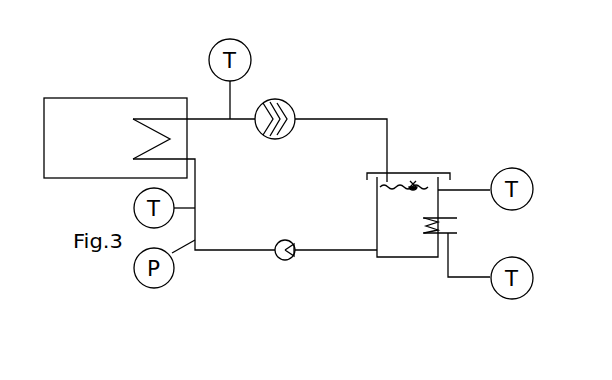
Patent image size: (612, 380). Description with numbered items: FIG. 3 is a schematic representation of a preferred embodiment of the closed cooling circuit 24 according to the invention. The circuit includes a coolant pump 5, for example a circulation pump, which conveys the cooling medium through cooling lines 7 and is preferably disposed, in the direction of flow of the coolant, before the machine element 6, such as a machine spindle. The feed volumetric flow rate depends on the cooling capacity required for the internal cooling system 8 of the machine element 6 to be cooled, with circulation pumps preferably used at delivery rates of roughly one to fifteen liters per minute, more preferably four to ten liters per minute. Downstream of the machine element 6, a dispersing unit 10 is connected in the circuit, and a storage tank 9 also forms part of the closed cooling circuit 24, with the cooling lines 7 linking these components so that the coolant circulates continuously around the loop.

The coolant pump 5 is at (290, 246).
The machine element 6 is at (87, 146).
The cooling lines 7 is at (233, 253).
The internal cooling system 8 is at (162, 118).
The storage tank 9 is at (397, 250).
The dispersing unit 10 is at (277, 98).
The closed cooling circuit 24 is at (412, 112).